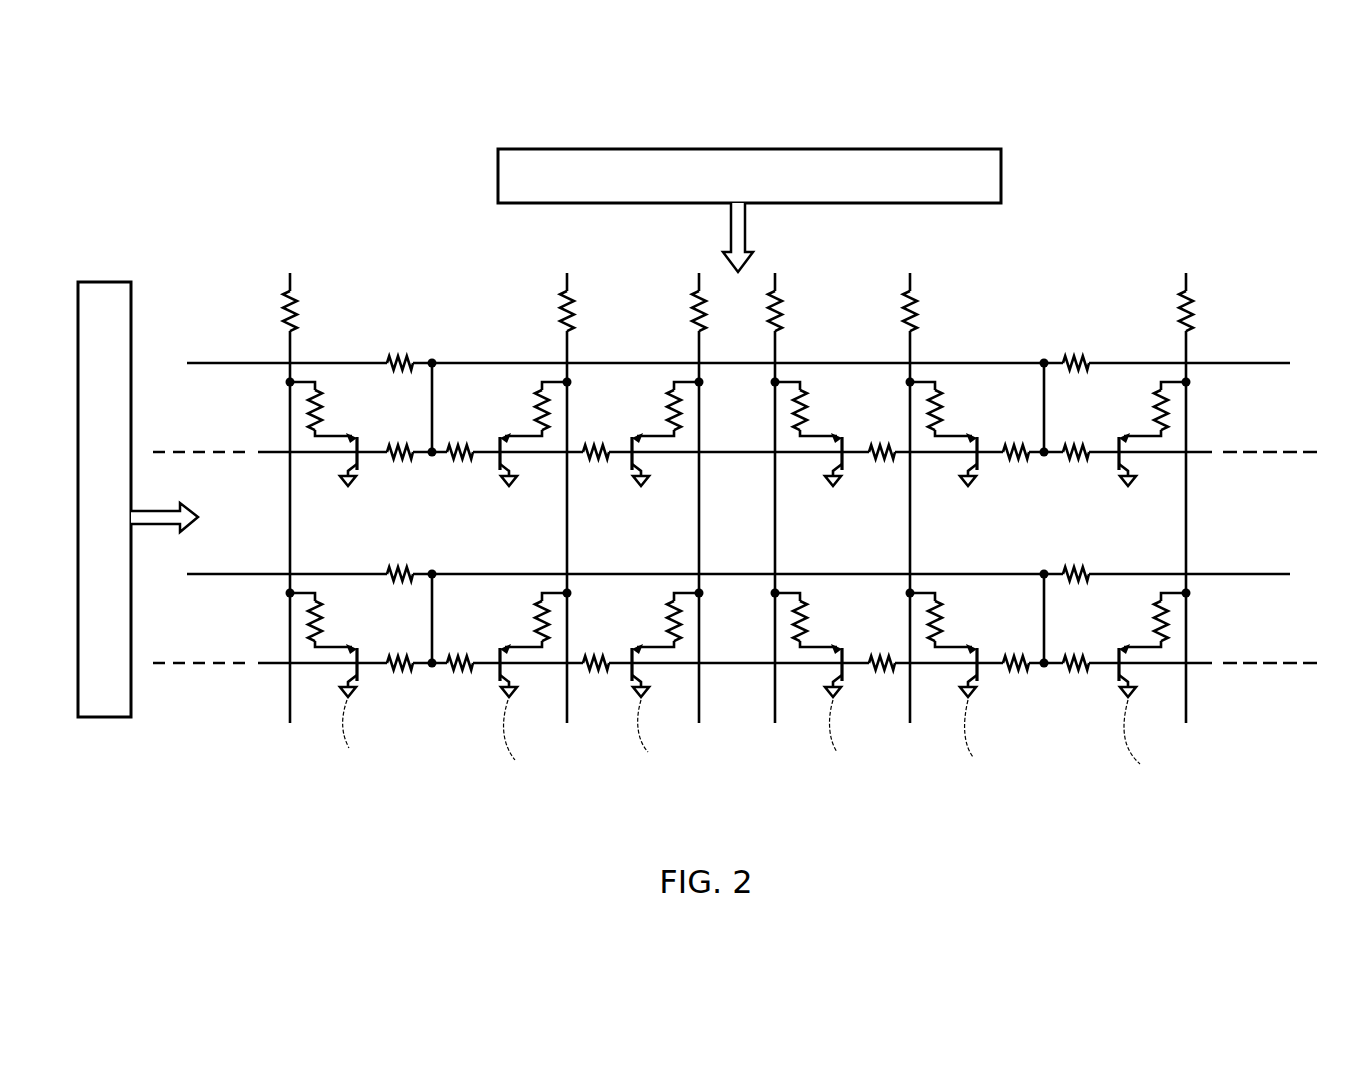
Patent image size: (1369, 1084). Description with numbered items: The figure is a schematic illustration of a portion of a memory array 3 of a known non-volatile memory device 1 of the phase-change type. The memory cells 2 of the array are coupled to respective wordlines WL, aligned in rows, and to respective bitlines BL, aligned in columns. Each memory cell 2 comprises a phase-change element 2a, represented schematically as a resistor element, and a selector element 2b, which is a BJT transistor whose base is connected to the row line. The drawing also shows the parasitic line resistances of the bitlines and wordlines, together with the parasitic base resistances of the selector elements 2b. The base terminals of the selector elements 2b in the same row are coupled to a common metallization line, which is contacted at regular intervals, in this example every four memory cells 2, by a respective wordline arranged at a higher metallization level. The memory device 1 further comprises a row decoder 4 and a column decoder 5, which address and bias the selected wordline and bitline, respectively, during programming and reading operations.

The memory device 1 is at (226, 161).
The memory cells 2 is at (338, 460).
The phase-change elements 2a is at (323, 410).
The selector elements 2b is at (361, 460).
The memory array 3 is at (1123, 237).
The row decoder 4 is at (112, 294).
The column decoder 5 is at (984, 171).